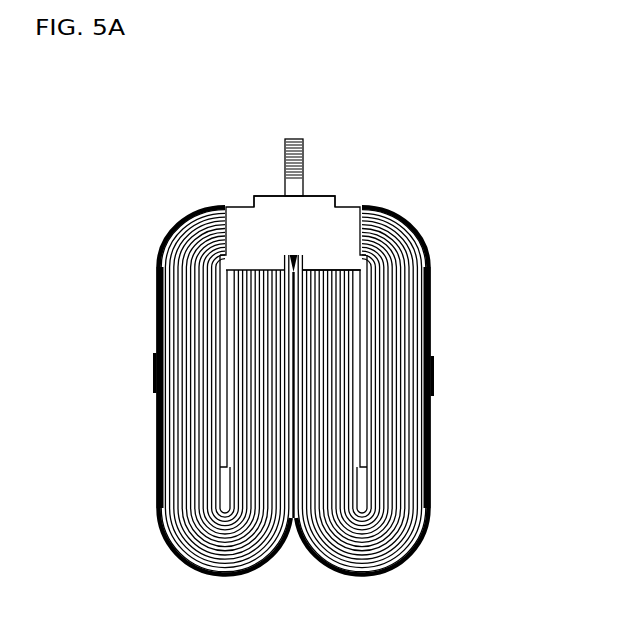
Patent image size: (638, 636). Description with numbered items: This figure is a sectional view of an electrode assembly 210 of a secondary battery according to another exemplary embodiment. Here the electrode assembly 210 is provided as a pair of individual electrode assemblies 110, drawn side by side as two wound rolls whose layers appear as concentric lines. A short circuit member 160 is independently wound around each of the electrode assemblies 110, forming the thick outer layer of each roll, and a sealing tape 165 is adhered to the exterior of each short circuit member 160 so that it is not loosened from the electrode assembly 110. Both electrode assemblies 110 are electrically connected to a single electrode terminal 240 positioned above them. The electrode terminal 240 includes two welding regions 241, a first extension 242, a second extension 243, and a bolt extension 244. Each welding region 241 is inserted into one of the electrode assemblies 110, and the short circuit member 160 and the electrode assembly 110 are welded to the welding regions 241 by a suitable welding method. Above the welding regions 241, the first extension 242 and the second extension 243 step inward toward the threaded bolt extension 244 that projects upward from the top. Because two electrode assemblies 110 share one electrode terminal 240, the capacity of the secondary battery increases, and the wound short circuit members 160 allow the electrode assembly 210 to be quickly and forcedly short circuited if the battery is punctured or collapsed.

The electrode assembly 110 is at (210, 550).
The short circuit member 160 is at (170, 555).
The sealing tape 165 is at (157, 390).
The electrode assembly 210 is at (306, 356).
The electrode terminal 240 is at (362, 188).
The welding region 241 is at (403, 242).
The first extension 242 is at (350, 240).
The second extension 243 is at (327, 192).
The bolt extension 244 is at (303, 150).